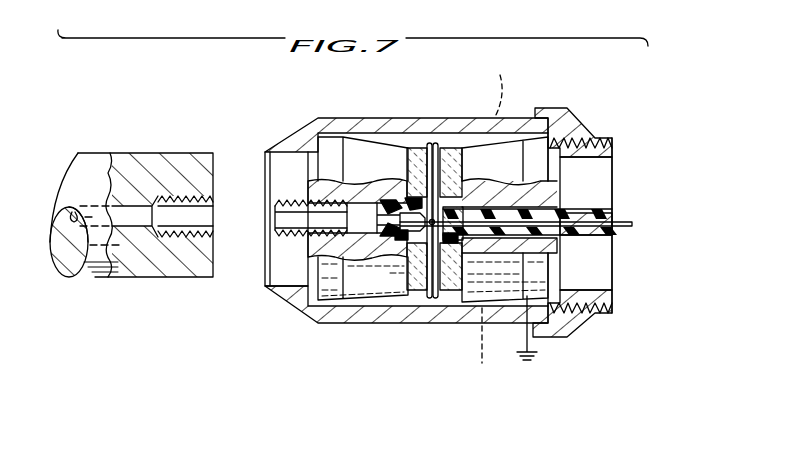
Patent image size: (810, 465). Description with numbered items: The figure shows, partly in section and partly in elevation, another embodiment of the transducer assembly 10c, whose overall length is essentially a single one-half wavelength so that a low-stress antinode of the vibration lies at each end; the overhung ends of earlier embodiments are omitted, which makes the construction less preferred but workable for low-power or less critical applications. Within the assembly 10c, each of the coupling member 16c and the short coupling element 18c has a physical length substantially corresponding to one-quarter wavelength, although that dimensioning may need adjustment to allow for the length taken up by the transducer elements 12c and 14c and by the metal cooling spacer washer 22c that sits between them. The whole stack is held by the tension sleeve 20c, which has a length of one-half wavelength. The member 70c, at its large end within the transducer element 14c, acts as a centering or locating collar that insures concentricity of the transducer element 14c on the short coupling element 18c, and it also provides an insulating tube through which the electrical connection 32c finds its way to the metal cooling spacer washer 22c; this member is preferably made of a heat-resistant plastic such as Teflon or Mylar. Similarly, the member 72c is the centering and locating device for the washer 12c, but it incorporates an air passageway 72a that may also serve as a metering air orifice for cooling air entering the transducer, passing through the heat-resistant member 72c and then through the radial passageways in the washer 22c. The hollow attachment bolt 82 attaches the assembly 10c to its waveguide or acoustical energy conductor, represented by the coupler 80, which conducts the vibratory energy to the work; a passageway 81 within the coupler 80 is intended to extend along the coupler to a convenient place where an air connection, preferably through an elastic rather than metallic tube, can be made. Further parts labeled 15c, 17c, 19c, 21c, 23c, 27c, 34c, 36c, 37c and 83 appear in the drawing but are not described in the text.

The transducer assembly 10c is at (318, 358).
The transducer element 12c is at (413, 150).
The transducer element 14c is at (451, 148).
The connector body 15c is at (305, 141).
The coupling member 16c is at (353, 150).
The body wall 17c is at (413, 300).
The short coupling element 18c is at (515, 170).
The body wall 19c is at (316, 297).
The tension sleeve 20c is at (508, 122).
The insulating washer 21c is at (453, 290).
The metal cooling spacer washer 22c is at (435, 148).
The insulator sleeve 23c is at (560, 272).
The axis line 27c is at (489, 222).
The electrical connection 32c is at (622, 222).
The ground connection 34c is at (530, 346).
The sleeve 36c is at (560, 238).
The threads 37c is at (612, 146).
The centering collar member 70c is at (574, 213).
The air passageway 72a is at (363, 278).
The centering and locating member 72c is at (393, 150).
The coupler 80 is at (162, 277).
The passageway 81 is at (132, 199).
The hollow attachment bolt 82 is at (284, 242).
The threaded bore 83 is at (196, 206).